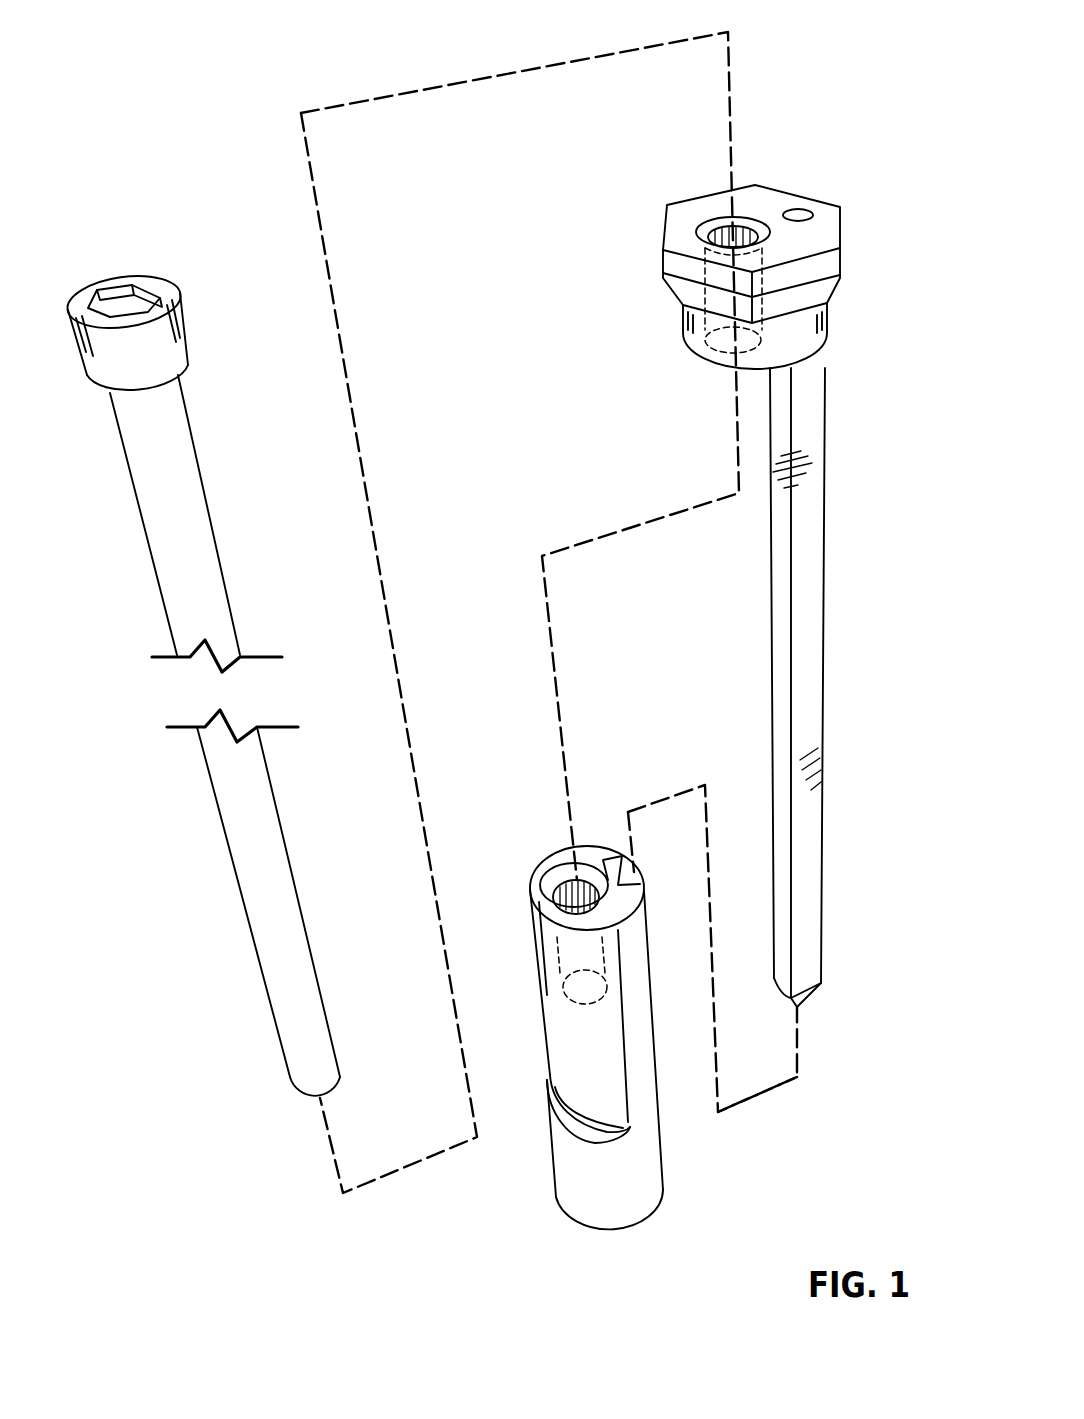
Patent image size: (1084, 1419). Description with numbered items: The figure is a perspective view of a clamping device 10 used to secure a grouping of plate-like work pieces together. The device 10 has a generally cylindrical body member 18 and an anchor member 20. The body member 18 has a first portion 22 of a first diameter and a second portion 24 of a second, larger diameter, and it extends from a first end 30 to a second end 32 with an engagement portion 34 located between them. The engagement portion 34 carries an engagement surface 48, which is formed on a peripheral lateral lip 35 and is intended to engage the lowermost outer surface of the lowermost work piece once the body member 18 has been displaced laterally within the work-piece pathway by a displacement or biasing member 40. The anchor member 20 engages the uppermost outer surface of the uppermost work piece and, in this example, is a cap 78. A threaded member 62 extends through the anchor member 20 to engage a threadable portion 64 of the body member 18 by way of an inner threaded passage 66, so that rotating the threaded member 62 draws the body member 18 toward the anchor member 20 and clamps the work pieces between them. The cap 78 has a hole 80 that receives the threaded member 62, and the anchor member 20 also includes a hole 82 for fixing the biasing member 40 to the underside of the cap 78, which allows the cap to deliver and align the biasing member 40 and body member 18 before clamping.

The clamping device 10 is at (195, 75).
The body member 18 is at (692, 1172).
The anchor member 20 is at (847, 192).
The first portion 22 is at (522, 914).
The second portion 24 is at (688, 1216).
The first end 30 is at (552, 1212).
The second end 32 is at (587, 829).
The engagement portion 34 is at (520, 1052).
The peripheral lateral lip 35 is at (612, 1138).
The biasing member 40 is at (845, 776).
The engagement surface 48 is at (586, 1140).
The threaded member 62 is at (210, 950).
The threadable portion 64 is at (545, 846).
The inner threaded passage 66 is at (592, 880).
The cap 78 is at (833, 232).
The hole 80 is at (720, 242).
The hole 82 is at (798, 213).